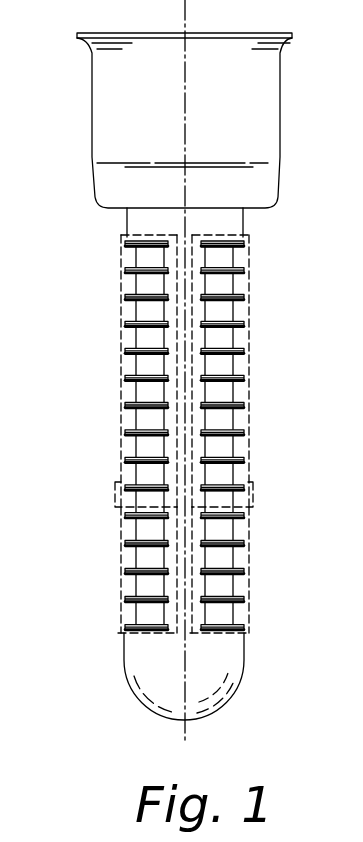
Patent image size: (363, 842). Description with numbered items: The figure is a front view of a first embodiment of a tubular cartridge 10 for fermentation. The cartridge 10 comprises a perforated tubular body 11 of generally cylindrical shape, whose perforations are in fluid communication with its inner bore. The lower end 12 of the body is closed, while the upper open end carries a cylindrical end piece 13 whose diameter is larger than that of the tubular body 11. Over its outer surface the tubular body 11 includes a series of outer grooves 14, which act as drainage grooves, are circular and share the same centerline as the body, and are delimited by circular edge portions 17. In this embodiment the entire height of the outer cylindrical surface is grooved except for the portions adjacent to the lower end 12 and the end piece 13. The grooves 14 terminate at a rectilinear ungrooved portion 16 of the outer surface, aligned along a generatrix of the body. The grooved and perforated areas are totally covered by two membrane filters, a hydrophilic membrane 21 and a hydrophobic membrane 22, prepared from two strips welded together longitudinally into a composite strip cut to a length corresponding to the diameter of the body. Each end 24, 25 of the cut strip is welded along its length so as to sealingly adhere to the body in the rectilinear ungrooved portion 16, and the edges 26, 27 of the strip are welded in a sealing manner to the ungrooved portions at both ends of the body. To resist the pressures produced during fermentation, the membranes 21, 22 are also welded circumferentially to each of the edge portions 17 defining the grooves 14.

The cartridge 10 is at (260, 330).
The perforated tubular body 11 is at (169, 431).
The lower end 12 is at (64, 636).
The cylindrical end piece 13 is at (65, 36).
The outer grooves 14 is at (150, 334).
The rectilinear ungrooved portion 16 is at (182, 587).
The circular edge portions 17 is at (240, 452).
The hydrophilic membrane 21 is at (249, 279).
The hydrophobic membrane 22 is at (250, 530).
The end of the cut strip 24 is at (173, 416).
The end of the cut strip 25 is at (246, 392).
The edge of the cut strip 26 is at (215, 632).
The edge of the cut strip 27 is at (233, 238).